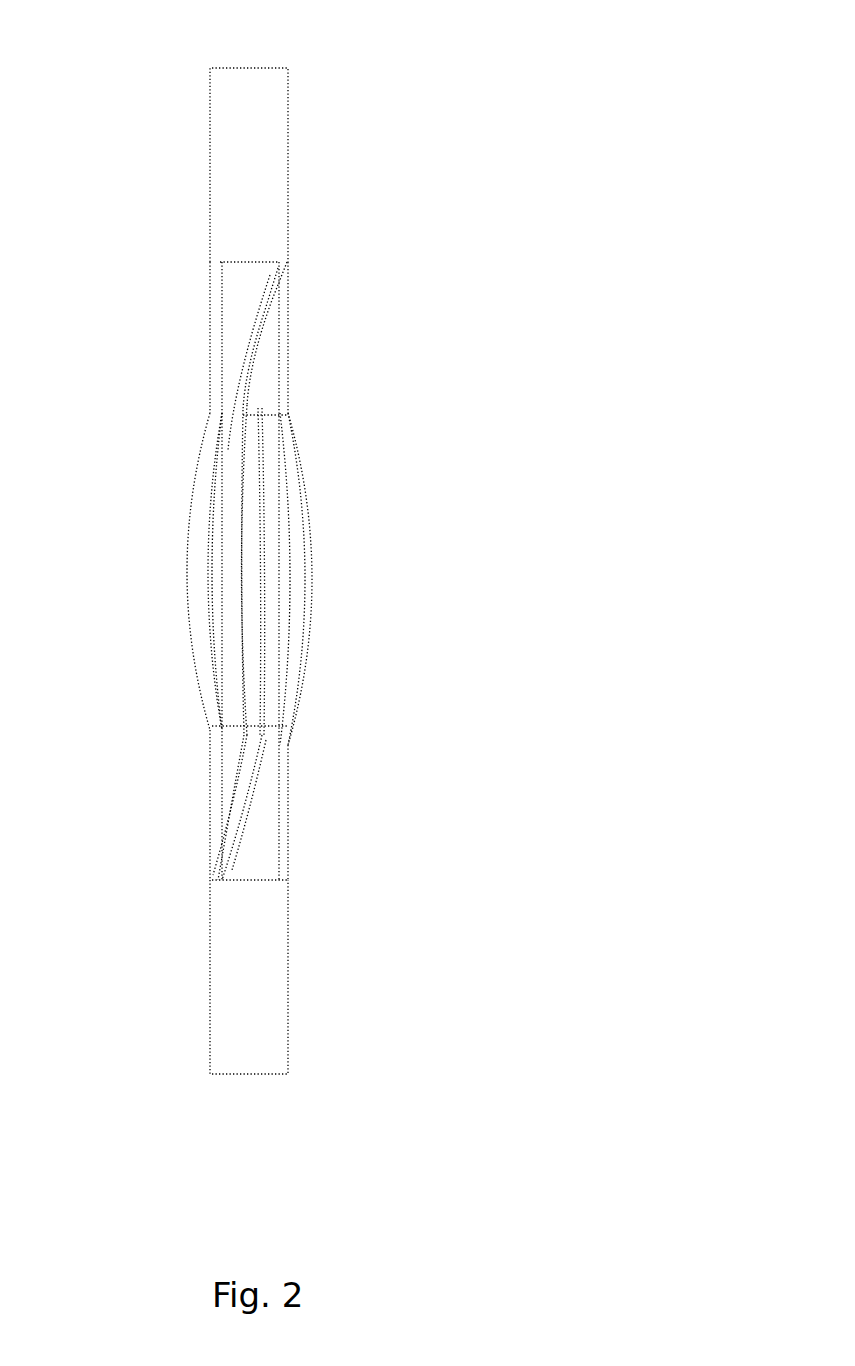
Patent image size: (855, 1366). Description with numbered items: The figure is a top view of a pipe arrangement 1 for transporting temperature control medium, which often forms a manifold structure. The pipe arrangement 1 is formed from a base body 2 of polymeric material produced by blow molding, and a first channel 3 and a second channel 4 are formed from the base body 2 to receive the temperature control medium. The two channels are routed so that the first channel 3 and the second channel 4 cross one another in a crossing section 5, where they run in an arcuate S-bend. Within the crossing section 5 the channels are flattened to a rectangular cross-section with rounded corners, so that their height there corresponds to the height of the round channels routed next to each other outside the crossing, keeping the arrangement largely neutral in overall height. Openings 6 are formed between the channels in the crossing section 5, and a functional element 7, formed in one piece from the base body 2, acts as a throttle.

The pipe arrangement 1 is at (455, 170).
The base body 2 is at (237, 172).
The first channel 3 is at (272, 365).
The second channel 4 is at (223, 315).
The crossing section 5 is at (374, 655).
The openings 6 is at (246, 407).
The functional element 7 is at (238, 965).